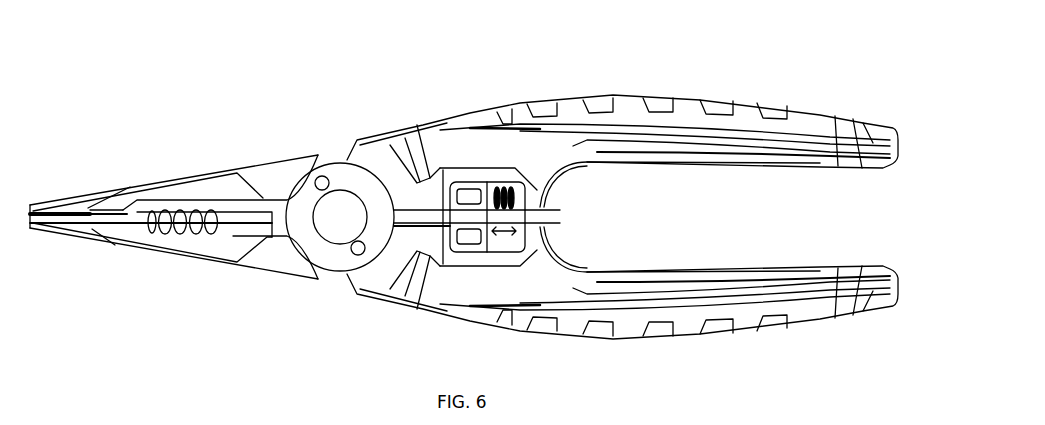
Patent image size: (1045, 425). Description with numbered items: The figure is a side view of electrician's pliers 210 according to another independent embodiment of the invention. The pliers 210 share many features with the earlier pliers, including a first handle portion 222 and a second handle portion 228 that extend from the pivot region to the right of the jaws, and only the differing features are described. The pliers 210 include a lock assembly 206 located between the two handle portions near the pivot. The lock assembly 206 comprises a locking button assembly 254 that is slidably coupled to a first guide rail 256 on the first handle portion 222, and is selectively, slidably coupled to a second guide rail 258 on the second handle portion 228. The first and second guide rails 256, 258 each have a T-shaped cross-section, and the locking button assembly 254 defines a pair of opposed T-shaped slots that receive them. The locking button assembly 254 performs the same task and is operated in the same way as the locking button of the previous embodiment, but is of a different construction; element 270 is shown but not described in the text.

The pliers 210 is at (211, 125).
The lock assembly 206 is at (585, 215).
The first handle portion 222 is at (445, 135).
The second handle portion 228 is at (440, 248).
The locking button assembly 254 is at (517, 167).
The first guide rail 256 is at (488, 188).
The second guide rail 258 is at (462, 250).
The slide latch 270 is at (465, 190).